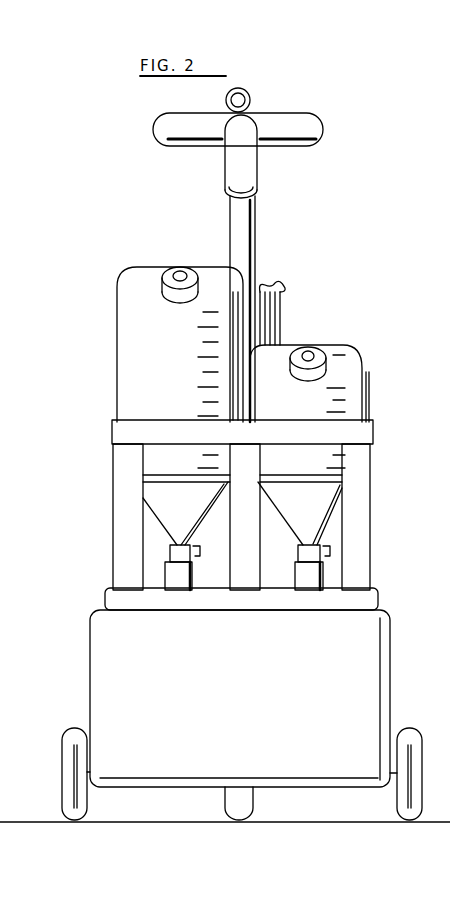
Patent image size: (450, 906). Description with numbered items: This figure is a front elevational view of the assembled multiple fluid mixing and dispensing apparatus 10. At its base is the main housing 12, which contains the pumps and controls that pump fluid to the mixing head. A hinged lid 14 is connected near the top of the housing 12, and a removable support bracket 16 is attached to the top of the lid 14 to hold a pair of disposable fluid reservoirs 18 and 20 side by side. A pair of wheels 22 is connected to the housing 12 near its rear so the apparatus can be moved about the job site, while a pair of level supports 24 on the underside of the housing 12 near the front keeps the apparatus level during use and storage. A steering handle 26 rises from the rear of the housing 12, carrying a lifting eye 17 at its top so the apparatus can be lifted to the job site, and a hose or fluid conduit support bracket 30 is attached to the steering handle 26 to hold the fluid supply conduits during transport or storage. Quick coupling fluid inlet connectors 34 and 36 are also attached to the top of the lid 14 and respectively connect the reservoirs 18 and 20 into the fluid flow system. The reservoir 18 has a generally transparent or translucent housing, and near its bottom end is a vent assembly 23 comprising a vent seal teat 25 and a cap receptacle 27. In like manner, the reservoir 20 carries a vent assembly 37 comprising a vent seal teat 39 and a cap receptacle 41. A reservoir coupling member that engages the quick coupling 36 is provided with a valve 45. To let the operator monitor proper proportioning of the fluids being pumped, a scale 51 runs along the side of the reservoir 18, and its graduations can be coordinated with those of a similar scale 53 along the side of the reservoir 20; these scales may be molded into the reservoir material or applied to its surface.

The multiple fluid mixing and dispensing apparatus 10 is at (341, 167).
The main housing 12 is at (390, 652).
The hinged lid 14 is at (380, 601).
The removable support bracket 16 is at (370, 503).
The lifting eye 17 is at (249, 96).
The disposable fluid reservoir 18 is at (116, 309).
The disposable fluid reservoir 20 is at (370, 373).
The wheels 22 is at (62, 752).
The vent assembly 23 is at (180, 250).
The level supports 24 is at (253, 799).
The vent seal teat 25 is at (174, 269).
The steering handle 26 is at (257, 212).
The cap receptacle 27 is at (181, 298).
The fluid conduit support bracket 30 is at (268, 287).
The quick coupling fluid inlet connector 34 is at (165, 575).
The quick coupling fluid inlet connector 36 is at (323, 572).
The vent assembly 37 is at (307, 334).
The vent seal teat 39 is at (304, 373).
The cap receptacle 41 is at (317, 348).
The valve 45 is at (330, 548).
The scale 51 is at (214, 288).
The scale 53 is at (344, 366).